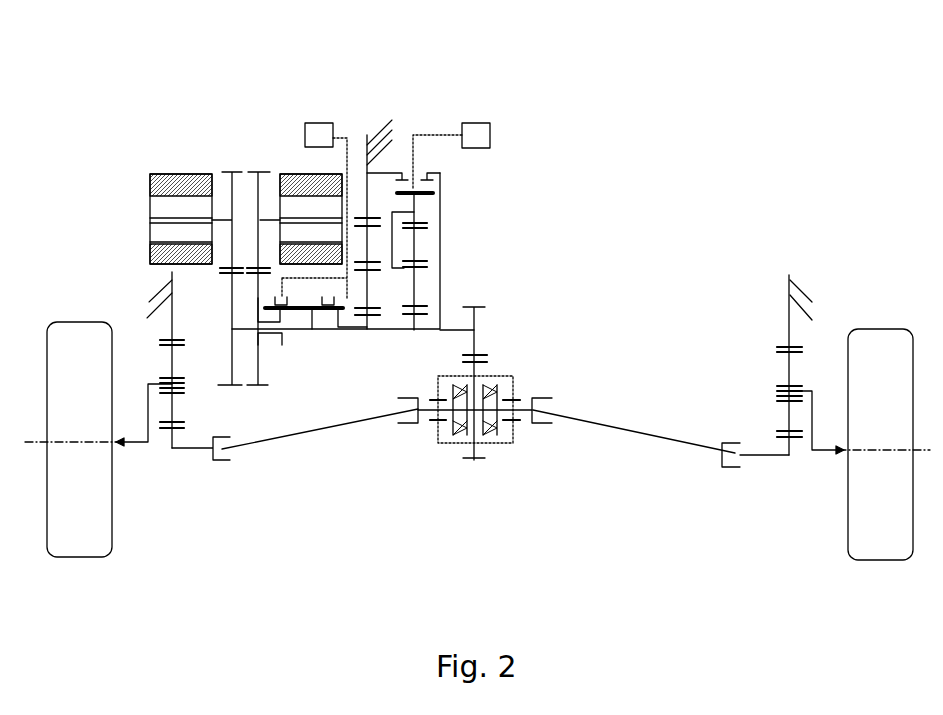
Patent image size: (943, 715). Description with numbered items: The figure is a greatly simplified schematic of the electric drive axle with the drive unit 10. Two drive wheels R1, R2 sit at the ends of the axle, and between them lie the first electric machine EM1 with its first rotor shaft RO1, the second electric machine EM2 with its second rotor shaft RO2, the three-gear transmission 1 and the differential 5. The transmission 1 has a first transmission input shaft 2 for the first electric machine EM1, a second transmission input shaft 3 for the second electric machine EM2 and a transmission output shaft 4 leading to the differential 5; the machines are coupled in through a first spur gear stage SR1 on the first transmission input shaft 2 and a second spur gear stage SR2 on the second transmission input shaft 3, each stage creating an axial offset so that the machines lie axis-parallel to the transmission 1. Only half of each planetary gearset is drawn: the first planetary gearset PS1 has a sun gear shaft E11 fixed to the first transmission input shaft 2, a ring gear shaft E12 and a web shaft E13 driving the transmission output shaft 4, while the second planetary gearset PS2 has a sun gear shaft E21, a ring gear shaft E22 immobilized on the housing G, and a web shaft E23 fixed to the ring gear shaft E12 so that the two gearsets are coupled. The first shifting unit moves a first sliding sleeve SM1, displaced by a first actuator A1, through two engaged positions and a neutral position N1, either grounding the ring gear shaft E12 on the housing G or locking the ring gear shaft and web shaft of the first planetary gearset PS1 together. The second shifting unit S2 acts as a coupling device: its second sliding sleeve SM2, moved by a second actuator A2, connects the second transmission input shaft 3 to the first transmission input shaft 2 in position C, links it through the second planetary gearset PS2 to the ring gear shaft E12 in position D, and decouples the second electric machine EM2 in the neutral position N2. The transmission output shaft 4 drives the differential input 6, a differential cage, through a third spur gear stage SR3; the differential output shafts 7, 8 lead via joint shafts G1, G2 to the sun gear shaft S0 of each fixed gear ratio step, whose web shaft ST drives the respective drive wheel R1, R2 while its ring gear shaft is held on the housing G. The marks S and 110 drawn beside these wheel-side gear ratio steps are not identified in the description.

The drive unit 10 is at (66, 205).
The transmission 1 is at (540, 182).
The first transmission input shaft 2 is at (238, 326).
The second transmission input shaft 3 is at (268, 345).
The transmission output shaft 4 is at (466, 331).
The differential 5 is at (450, 460).
The differential input 6 is at (490, 446).
The differential output shaft 7 is at (423, 422).
The differential output shaft 8 is at (436, 160).
The output shaft 110 is at (170, 327).
The first electric machine EM1 is at (142, 170).
The second electric machine EM2 is at (287, 162).
The first rotor shaft RO1 is at (222, 212).
The second rotor shaft RO2 is at (273, 217).
The first actuator A1 is at (484, 122).
The second actuator A2 is at (318, 122).
The third shift position N1 is at (413, 128).
The third shift position N2 is at (326, 345).
The rotationally fixed component G is at (150, 297).
The first sliding sleeve SM1 is at (420, 190).
The second sliding sleeve SM2 is at (282, 297).
The first element of the first planetary gearset E11 is at (424, 320).
The second element of the first planetary gearset E12 is at (423, 218).
The third element of the first planetary gearset E13 is at (433, 254).
The first element of the second planetary gearset E21 is at (375, 316).
The second element of the second planetary gearset E22 is at (363, 212).
The third element of the second planetary gearset E23 is at (375, 272).
The second shifting unit S2 is at (316, 294).
The first planetary gearset PS1 is at (413, 338).
The second planetary gearset PS2 is at (364, 340).
The first spur gear stage SR1 is at (231, 405).
The second spur gear stage SR2 is at (259, 396).
The third spur gear stage SR3 is at (499, 320).
The joint shaft G1 is at (316, 433).
The joint shaft G2 is at (640, 438).
The side shaft S is at (172, 470).
The sun gear shaft S0 is at (176, 440).
The web shaft ST is at (152, 383).
The first shift position C is at (312, 358).
The second shift position D is at (338, 346).
The drive wheel R1 is at (75, 557).
The drive wheel R2 is at (872, 561).